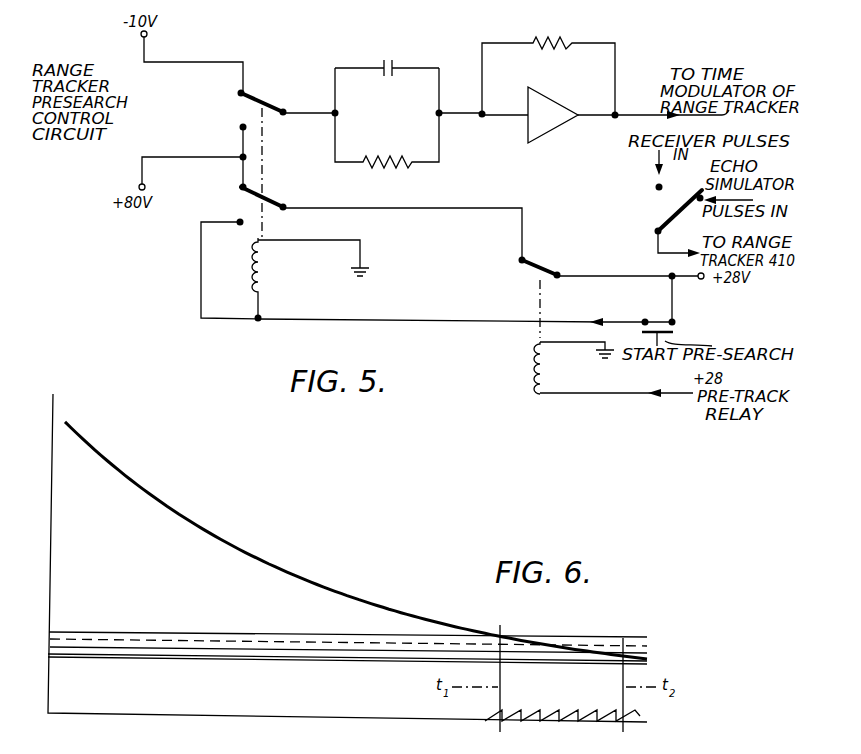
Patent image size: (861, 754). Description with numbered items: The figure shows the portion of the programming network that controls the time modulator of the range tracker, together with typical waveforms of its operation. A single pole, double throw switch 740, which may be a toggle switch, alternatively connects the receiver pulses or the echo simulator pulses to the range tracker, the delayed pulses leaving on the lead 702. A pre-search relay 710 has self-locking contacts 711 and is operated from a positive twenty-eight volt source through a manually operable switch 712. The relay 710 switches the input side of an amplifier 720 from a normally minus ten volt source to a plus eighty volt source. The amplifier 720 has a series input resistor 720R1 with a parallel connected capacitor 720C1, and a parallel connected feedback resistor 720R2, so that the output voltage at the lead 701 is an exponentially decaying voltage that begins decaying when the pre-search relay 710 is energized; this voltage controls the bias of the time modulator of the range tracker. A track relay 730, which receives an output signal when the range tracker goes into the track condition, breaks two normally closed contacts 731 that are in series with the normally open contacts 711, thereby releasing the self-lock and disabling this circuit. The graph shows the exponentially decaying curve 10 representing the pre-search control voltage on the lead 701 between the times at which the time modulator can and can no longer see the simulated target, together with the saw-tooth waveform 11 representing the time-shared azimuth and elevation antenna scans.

In FIG. 5, the lead 701 is at (630, 114).
In FIG. 5, the lead 702 is at (670, 255).
In FIG. 5, the pre-search relay 710 is at (265, 262).
In FIG. 5, the self-locking contacts 711 is at (266, 197).
In FIG. 5, the manually operable switch 712 is at (681, 327).
In FIG. 5, the amplifier 720 is at (546, 130).
In FIG. 5, the capacitor 720C1 is at (407, 41).
In FIG. 5, the series input resistor 720R1 is at (368, 167).
In FIG. 5, the feedback resistor 720R2 is at (578, 26).
In FIG. 5, the track relay 730 is at (529, 374).
In FIG. 5, the normally closed contacts 731 is at (532, 263).
In FIG. 5, the single pole, double throw switch 740 is at (656, 212).
In FIG. 6, the exponentially decaying curve 10 is at (218, 534).
In FIG. 6, the saw-tooth waveform 11 is at (557, 711).